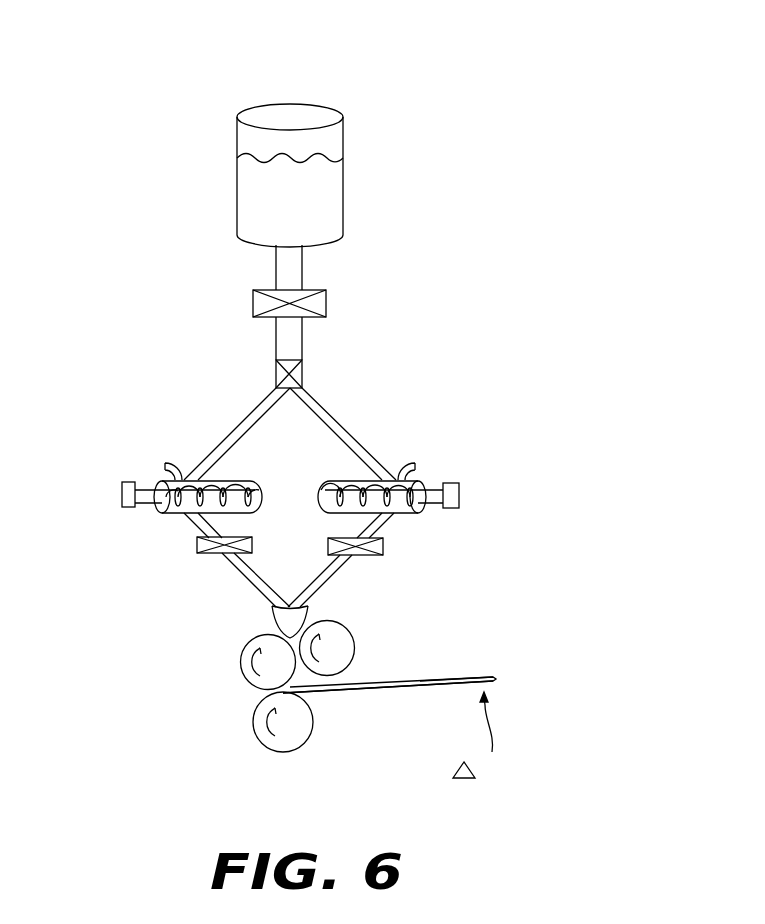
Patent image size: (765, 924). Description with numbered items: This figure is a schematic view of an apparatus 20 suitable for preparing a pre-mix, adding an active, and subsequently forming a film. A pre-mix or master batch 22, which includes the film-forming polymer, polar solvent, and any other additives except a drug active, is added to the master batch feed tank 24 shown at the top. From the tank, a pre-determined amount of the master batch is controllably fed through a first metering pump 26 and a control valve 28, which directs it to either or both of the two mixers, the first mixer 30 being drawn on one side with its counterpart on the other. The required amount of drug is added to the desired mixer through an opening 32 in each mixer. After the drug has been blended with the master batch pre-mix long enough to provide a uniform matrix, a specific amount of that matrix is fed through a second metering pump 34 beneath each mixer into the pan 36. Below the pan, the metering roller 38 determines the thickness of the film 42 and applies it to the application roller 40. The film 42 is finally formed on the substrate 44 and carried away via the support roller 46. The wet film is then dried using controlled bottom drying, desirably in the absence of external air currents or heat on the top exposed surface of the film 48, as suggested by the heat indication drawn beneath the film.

The apparatus 20 is at (328, 84).
The pre-mix or master batch 22 is at (320, 194).
The master batch feed tank 24 is at (343, 137).
The first metering pump 26 is at (326, 302).
The control valve 28 is at (302, 375).
The first mixer 30 is at (422, 483).
The opening 32 is at (413, 462).
The second metering pump 34 is at (383, 547).
The pan 36 is at (273, 611).
The metering roller 38 is at (347, 623).
The application roller 40 is at (240, 660).
The film 42 is at (385, 678).
The substrate 44 is at (372, 690).
The support roller 46 is at (305, 745).
The top (exposed) surface of the film 48 is at (440, 677).